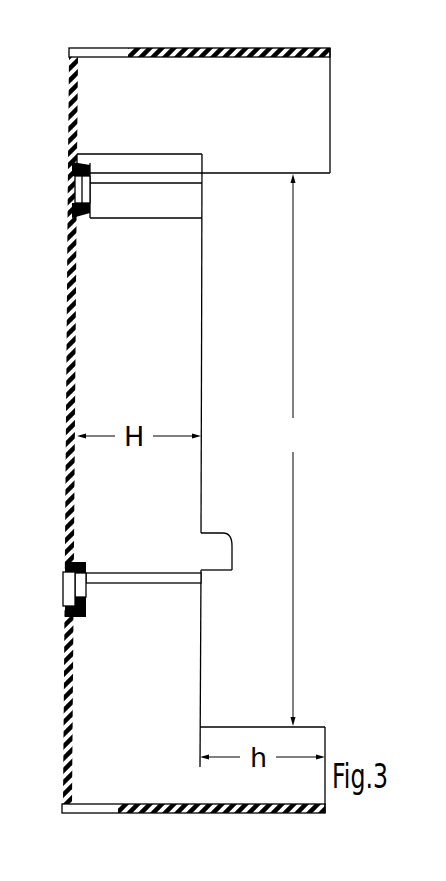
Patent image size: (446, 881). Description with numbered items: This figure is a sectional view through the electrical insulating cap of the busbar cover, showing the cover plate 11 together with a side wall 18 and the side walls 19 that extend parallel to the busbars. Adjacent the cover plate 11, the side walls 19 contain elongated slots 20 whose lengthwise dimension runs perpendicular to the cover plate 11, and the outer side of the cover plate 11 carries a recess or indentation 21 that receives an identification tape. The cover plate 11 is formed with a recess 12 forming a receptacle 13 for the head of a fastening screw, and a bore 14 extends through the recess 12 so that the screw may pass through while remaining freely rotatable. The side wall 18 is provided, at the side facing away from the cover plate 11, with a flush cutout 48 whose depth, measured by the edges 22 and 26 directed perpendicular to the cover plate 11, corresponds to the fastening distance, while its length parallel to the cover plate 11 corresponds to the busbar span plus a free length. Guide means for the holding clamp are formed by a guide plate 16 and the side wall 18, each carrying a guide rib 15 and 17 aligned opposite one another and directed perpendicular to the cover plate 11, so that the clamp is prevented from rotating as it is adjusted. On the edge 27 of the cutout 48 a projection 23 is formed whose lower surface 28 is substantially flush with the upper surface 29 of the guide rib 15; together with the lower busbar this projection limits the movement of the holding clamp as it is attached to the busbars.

The cover plate 11 is at (69, 372).
The recess 12 is at (84, 164).
The receptacle 13 is at (70, 200).
The bore 14 is at (82, 191).
The guide rib 15 is at (174, 584).
The guide plate 16 is at (173, 154).
The guide rib 17 is at (184, 181).
The side wall 18 is at (183, 376).
The side wall 19 is at (247, 49).
The elongated slot 20 is at (101, 49).
The recess or indentation 21 is at (68, 90).
The edge 22 is at (310, 175).
The projection 23 is at (223, 540).
The edge 26 is at (311, 726).
The edge 27 is at (203, 309).
The lower surface 28 is at (223, 571).
The upper surface 29 is at (128, 572).
The cutout 48 is at (248, 263).